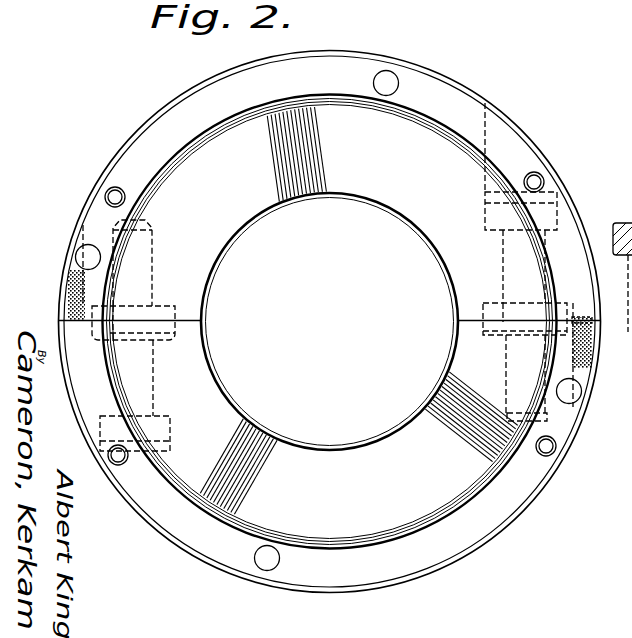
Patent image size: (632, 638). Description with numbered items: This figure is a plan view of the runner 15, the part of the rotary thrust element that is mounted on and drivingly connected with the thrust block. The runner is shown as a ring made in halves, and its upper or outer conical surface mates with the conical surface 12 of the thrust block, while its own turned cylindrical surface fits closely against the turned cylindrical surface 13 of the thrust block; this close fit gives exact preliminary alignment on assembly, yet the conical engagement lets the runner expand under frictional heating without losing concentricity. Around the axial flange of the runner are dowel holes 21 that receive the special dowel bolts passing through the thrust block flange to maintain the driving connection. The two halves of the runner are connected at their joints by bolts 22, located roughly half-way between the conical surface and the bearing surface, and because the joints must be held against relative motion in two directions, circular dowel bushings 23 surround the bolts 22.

The conical surface 12 is at (329, 458).
The turned cylindrical surface 13 is at (321, 548).
The runner 15 is at (257, 428).
The dowel holes 21 is at (394, 73).
The bolts 22 is at (153, 401).
The circular dowel bushings 23 is at (165, 310).